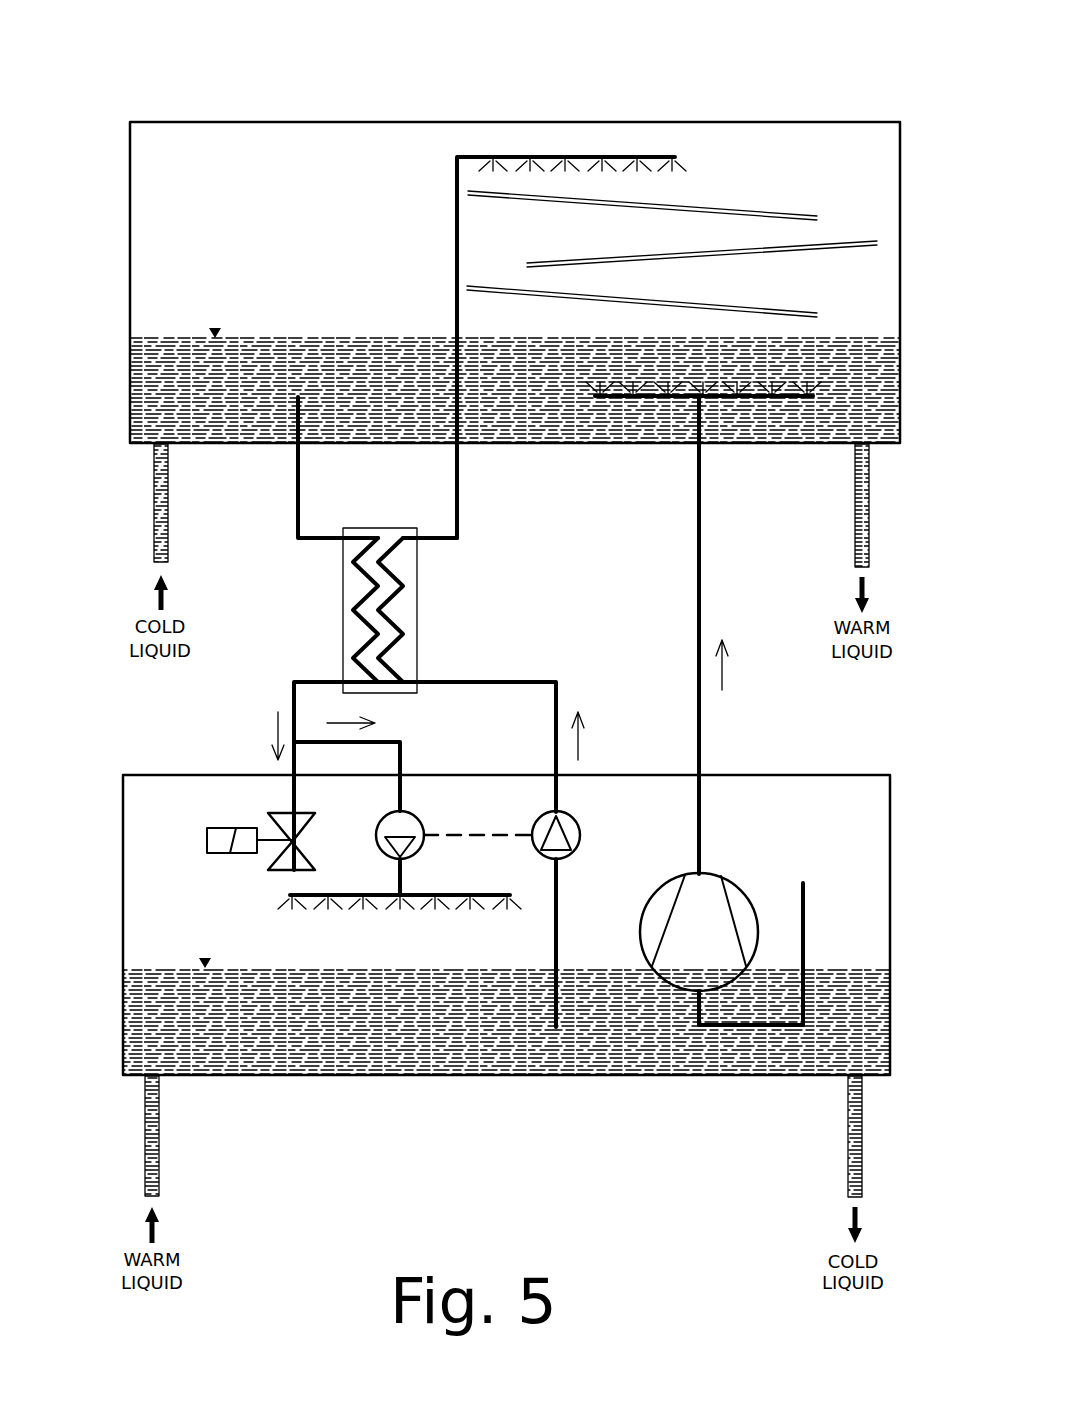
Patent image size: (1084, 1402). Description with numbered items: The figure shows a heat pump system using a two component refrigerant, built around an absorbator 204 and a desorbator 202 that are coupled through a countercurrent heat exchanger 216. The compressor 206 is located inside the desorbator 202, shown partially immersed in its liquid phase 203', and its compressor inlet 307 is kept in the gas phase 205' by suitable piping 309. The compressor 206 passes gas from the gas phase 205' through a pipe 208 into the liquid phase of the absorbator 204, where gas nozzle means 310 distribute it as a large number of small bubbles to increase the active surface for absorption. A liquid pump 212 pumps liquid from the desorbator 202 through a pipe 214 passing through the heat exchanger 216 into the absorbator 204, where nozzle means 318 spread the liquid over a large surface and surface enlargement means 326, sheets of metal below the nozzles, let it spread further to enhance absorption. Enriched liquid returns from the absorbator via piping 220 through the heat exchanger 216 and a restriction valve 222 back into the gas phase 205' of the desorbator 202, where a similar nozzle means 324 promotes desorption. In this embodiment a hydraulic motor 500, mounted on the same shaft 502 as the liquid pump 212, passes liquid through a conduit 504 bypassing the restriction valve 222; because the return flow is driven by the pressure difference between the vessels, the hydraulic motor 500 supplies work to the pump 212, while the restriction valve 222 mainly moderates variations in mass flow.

The absorbator 204 is at (695, 122).
The nozzle means 318 is at (587, 155).
The surface enlargement means 326 is at (730, 205).
The gas nozzle means 310 is at (730, 397).
The pipe 208 is at (702, 595).
The piping 220 is at (295, 493).
The countercurrent heat exchanger 216 is at (417, 590).
The pipe 214 is at (465, 678).
The liquid pump 212 is at (538, 818).
The restriction valve 222 is at (279, 820).
The desorbator 202 is at (673, 770).
The gas phase of the desorbator 205' is at (798, 760).
The liquid phase of the desorbator 203' is at (506, 1077).
The compressor 206 is at (682, 872).
The compressor inlet 307 is at (802, 897).
The piping 309 is at (733, 1028).
The nozzle means 324 is at (340, 903).
The hydraulic motor 500 is at (413, 857).
The shaft 502 is at (487, 835).
The conduit 504 is at (398, 788).